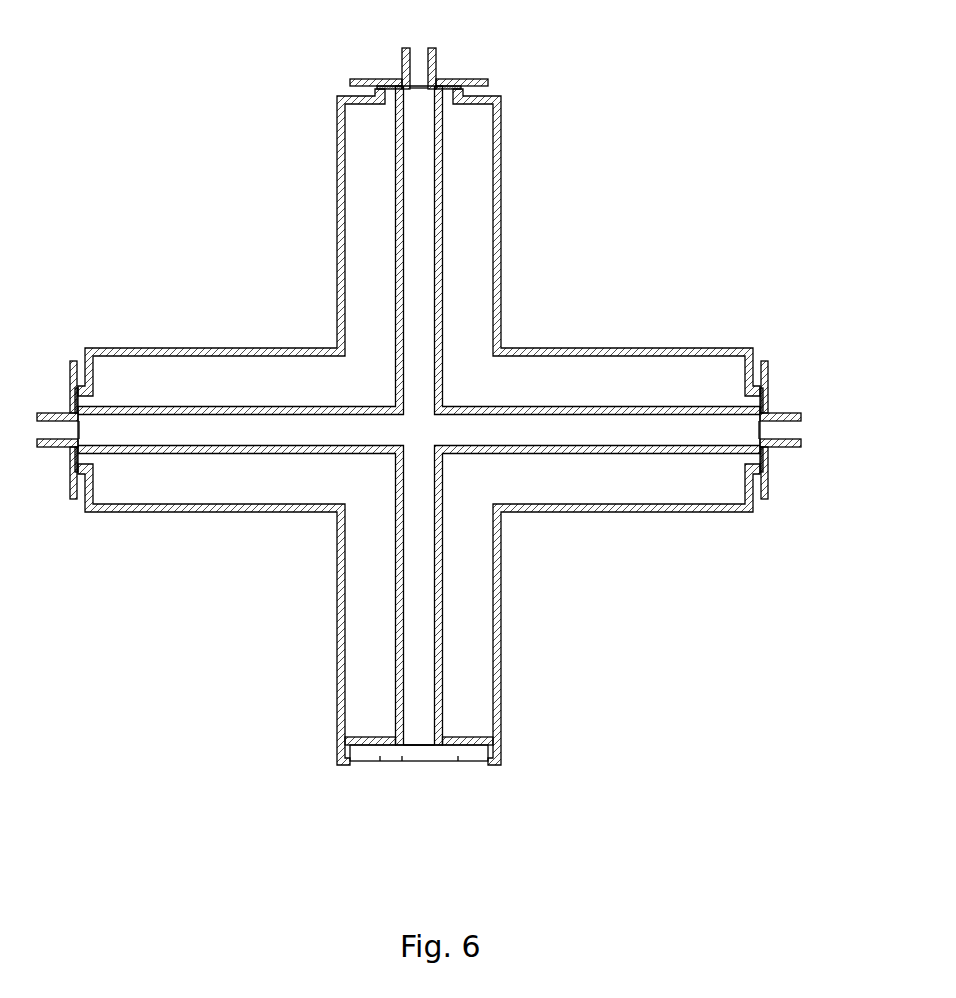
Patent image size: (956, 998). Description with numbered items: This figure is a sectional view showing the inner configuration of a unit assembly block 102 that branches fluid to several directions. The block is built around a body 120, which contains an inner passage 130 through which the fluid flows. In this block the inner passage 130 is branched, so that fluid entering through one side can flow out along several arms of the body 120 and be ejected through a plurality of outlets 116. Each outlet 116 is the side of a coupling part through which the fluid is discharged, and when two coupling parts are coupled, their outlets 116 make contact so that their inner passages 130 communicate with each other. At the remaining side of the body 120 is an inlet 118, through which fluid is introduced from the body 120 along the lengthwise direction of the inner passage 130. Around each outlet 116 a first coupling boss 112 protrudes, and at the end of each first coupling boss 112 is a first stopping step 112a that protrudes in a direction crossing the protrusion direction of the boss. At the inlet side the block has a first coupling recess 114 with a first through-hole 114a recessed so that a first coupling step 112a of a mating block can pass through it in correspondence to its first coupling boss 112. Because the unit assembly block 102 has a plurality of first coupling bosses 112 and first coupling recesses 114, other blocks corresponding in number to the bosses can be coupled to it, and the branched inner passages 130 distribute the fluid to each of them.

The unit assembly block 102 is at (692, 140).
The first coupling boss 112 is at (441, 104).
The first stopping step 112a is at (489, 86).
The first coupling recess 114 is at (348, 766).
The first through-hole 114a is at (472, 763).
The outlet 116 is at (431, 48).
The inlet 118 is at (416, 748).
The body 120 is at (650, 513).
The inner passage 130 is at (420, 247).